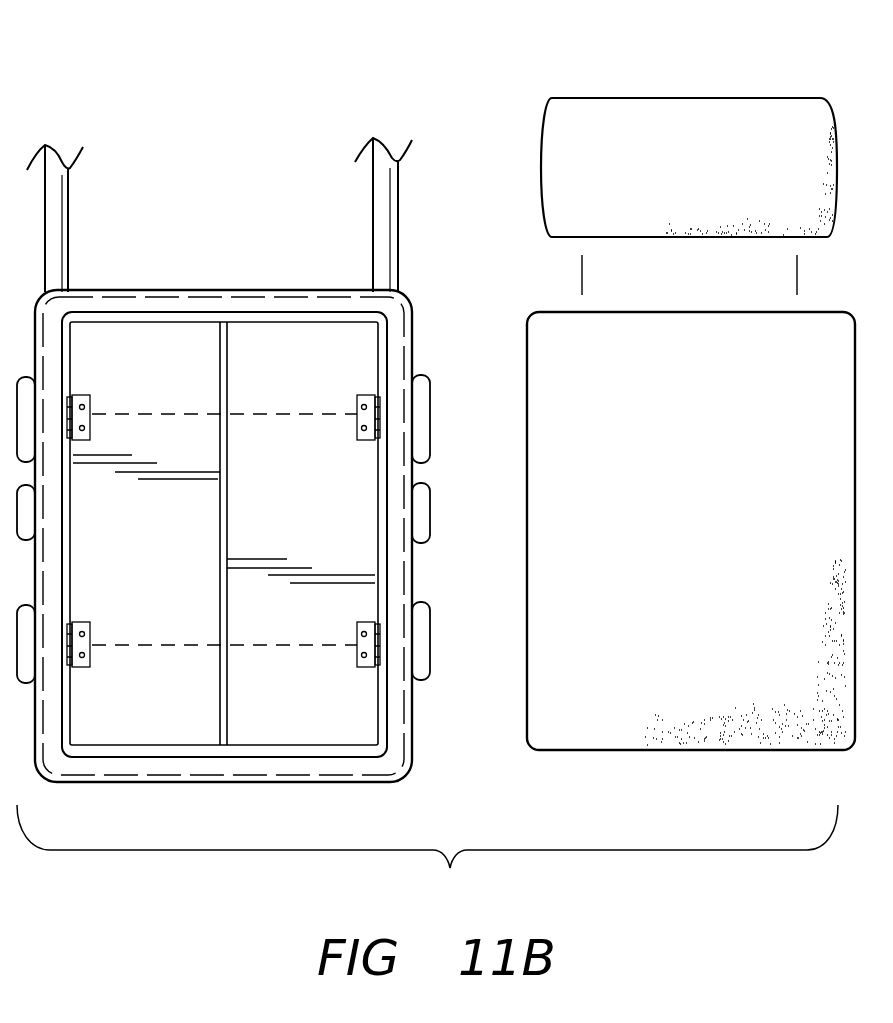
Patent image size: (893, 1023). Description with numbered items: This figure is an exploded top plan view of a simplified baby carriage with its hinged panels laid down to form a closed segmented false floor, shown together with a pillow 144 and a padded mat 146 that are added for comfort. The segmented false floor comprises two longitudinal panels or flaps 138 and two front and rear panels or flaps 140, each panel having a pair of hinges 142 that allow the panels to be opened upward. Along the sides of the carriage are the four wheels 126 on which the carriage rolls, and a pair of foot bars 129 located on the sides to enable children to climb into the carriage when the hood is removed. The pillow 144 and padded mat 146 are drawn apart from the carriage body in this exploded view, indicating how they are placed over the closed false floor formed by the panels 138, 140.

The wheels 126 is at (430, 395).
The foot bars 129 is at (430, 510).
The longitudinal panels 138 is at (170, 558).
The front and rear panels 140 is at (290, 393).
The hinges 142 is at (93, 408).
The pillow 144 is at (628, 98).
The padded mat 146 is at (690, 597).